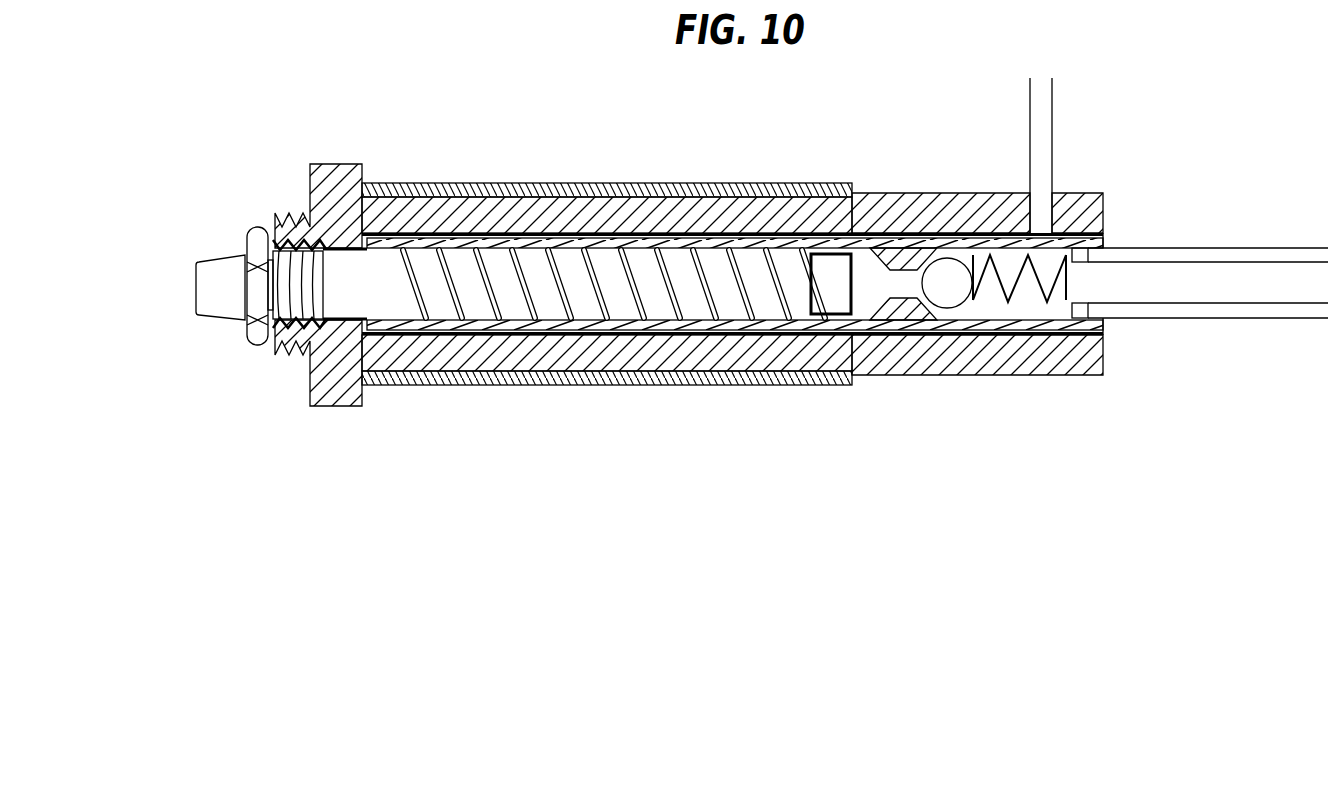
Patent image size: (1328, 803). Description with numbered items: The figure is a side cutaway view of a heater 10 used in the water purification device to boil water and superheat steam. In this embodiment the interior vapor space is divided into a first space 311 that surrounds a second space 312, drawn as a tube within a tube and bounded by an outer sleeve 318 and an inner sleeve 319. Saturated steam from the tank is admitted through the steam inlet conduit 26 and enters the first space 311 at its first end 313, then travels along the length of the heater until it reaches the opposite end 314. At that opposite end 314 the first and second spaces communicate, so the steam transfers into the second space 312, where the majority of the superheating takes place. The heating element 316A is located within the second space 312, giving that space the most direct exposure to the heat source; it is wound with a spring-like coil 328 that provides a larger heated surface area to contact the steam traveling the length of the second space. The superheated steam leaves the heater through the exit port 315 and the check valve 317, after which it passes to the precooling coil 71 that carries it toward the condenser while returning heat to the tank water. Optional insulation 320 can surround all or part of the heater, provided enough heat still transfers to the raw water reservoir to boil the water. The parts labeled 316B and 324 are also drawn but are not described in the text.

The heater 10 is at (447, 100).
The steam inlet conduit 26 is at (1038, 117).
The precooling coil 71 is at (1090, 282).
The first space 311 is at (592, 235).
The second space 312 is at (394, 238).
The first end 313 is at (960, 193).
The opposite end 314 is at (355, 242).
The exit port 315 is at (903, 283).
The heating element 316A is at (753, 288).
The nozzle retaining nut 316B is at (308, 183).
The check valve 317 is at (948, 285).
The outer sleeve 318 is at (526, 214).
The inner sleeve 319 is at (647, 236).
The insulation 320 is at (478, 192).
The valve spring 324 is at (997, 288).
The coil 328 is at (510, 290).